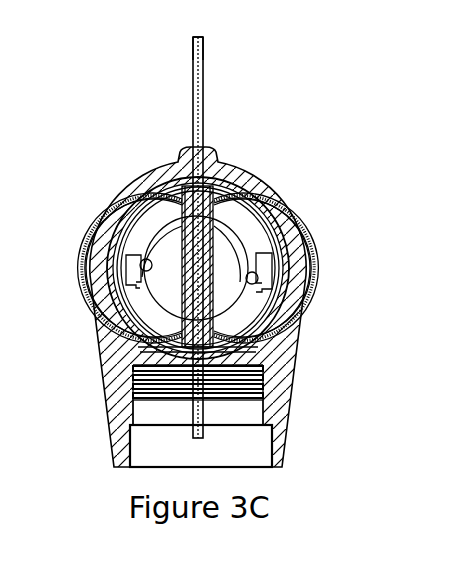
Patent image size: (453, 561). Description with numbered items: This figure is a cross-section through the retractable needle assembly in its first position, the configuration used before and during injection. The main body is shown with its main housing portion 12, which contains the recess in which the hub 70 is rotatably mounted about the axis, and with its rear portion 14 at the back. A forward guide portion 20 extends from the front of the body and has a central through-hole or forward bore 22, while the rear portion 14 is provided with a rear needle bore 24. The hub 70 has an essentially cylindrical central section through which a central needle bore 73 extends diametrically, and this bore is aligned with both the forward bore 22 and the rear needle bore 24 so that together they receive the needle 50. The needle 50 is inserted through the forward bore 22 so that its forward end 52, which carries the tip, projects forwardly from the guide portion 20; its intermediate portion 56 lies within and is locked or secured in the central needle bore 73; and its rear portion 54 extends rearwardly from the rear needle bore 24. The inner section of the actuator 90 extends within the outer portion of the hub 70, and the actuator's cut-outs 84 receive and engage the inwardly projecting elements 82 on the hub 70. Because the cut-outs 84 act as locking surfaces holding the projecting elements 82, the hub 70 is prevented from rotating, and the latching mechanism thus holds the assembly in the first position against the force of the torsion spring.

The main housing portion 12 is at (303, 262).
The rear portion 14 is at (170, 443).
The forward guide portion 20 is at (206, 158).
The forward bore 22 is at (223, 171).
The rear needle bore 24 is at (262, 376).
The needle 50 is at (190, 94).
The forward end 52 is at (193, 50).
The rear portion 54 is at (183, 407).
The intermediate portion 56 is at (160, 228).
The hub 70 is at (270, 322).
The central needle bore 73 is at (130, 310).
The projecting elements 82 is at (128, 268).
The cut-outs 84 is at (132, 250).
The actuator 90 is at (163, 222).